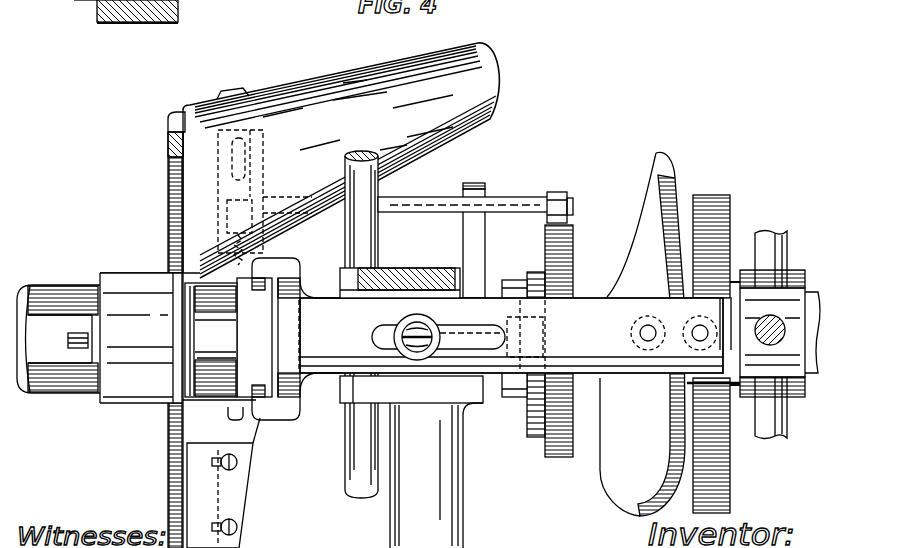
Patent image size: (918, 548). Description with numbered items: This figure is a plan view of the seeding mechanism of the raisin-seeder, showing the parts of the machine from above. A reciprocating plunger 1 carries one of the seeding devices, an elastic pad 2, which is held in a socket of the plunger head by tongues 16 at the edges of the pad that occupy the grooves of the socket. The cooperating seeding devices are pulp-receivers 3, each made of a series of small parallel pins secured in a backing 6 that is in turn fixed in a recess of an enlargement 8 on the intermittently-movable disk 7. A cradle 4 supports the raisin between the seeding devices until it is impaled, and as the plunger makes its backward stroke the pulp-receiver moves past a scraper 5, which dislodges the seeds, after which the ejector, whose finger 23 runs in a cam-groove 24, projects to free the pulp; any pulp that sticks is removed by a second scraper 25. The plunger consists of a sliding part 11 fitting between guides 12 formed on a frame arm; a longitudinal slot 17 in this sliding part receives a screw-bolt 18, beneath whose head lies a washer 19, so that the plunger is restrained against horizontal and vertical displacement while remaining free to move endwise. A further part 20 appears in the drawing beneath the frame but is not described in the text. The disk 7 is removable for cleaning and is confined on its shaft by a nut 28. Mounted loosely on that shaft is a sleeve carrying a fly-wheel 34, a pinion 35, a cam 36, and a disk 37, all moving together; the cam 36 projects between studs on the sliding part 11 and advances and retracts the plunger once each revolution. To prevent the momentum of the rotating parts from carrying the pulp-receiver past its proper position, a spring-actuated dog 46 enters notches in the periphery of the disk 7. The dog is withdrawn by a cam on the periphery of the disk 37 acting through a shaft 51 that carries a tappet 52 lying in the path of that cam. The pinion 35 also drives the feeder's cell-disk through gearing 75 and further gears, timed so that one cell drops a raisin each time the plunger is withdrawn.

The reciprocating plunger 1 is at (511, 335).
The elastic pad 2 is at (268, 337).
The pulp-receiver 3 is at (188, 0).
The cradle 4 is at (208, 320).
The scraper 5 is at (341, 160).
The backing 6 is at (74, 0).
The disk 7 is at (148, 23).
The enlargement 8 is at (118, 288).
The sliding part 11 is at (658, 333).
The guides 12 is at (412, 337).
The tongues 16 is at (271, 272).
The longitudinal slot 17 is at (493, 336).
The screw-bolt 18 is at (410, 330).
The washer 19 is at (410, 350).
The post 20 is at (343, 405).
The finger 23 is at (198, 334).
The cam-groove 24 is at (182, 398).
The scraper 25 is at (223, 483).
The nut 28 is at (58, 352).
The fly-wheel 34 is at (788, 252).
The pinion 35 is at (713, 197).
The cam 36 is at (655, 188).
The disk 37 is at (562, 455).
The spring-actuated dog 46 is at (173, 115).
The shaft 51 is at (500, 198).
The tappet 52 is at (560, 192).
The gearing 75 is at (747, 488).